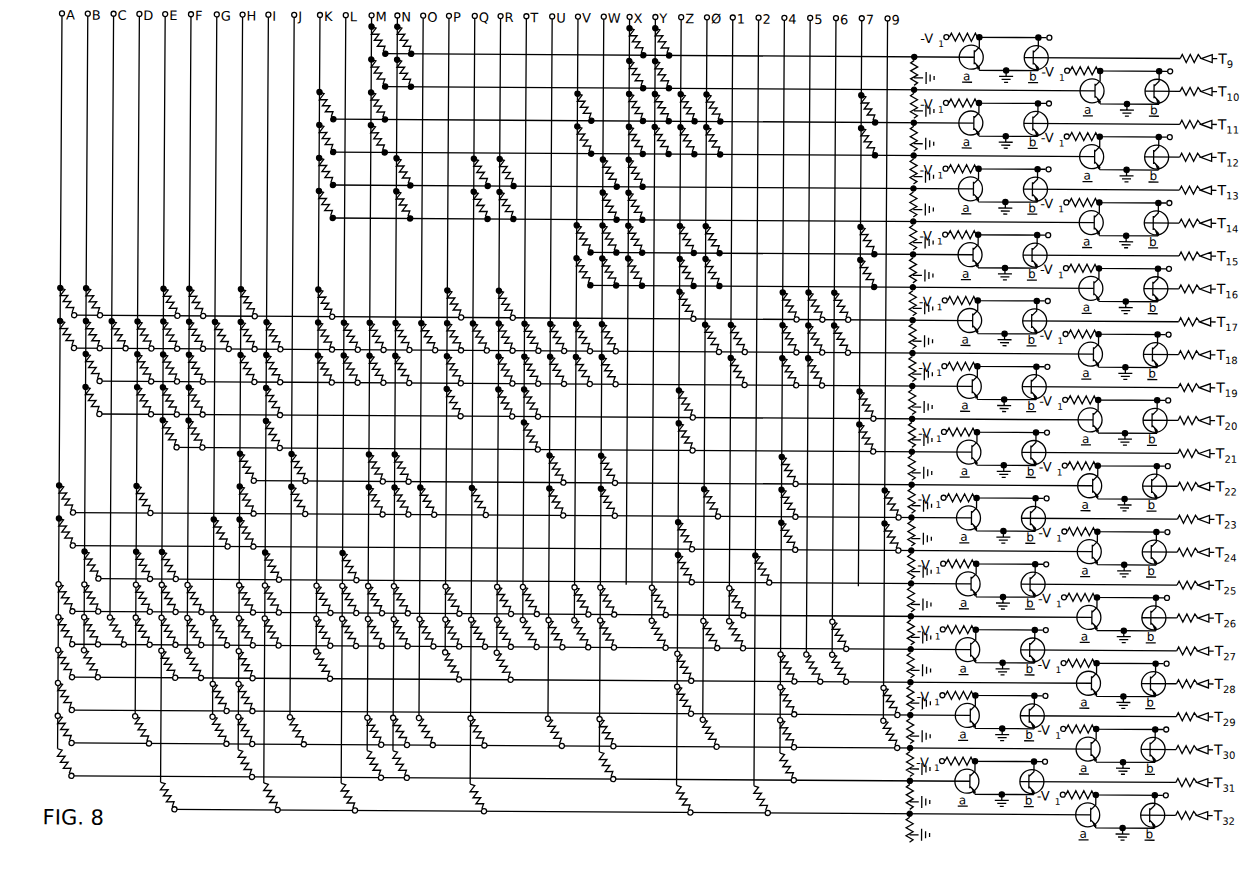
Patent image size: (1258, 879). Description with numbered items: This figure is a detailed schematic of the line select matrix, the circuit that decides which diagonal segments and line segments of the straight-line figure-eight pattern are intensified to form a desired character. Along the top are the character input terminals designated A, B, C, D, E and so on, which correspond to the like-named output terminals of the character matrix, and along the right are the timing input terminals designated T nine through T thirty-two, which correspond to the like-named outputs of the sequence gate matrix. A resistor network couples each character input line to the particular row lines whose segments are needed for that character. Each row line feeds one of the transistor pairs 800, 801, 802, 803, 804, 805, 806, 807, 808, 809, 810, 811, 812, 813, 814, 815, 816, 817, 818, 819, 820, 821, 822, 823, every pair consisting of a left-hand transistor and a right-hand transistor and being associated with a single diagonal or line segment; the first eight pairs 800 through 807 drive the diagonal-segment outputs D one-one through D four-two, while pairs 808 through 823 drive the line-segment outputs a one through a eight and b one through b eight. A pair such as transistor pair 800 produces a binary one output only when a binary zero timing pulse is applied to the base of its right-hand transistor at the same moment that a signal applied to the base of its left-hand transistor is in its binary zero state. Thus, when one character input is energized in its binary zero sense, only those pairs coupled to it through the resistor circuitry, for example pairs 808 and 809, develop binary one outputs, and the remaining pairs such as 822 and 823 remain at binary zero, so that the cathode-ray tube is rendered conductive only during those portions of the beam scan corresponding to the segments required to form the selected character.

The transistor pair 800 is at (999, 57).
The transistor pair 801 is at (1120, 91).
The transistor pair 802 is at (999, 123).
The transistor pair 803 is at (1119, 156).
The transistor pair 804 is at (998, 189).
The transistor pair 805 is at (1119, 222).
The transistor pair 806 is at (998, 254).
The transistor pair 807 is at (1119, 288).
The transistor pair 808 is at (994, 320).
The transistor pair 809 is at (1114, 354).
The transistor pair 810 is at (993, 386).
The transistor pair 811 is at (1114, 420).
The transistor pair 812 is at (993, 452).
The transistor pair 813 is at (1114, 485).
The transistor pair 814 is at (992, 518).
The transistor pair 815 is at (1114, 551).
The transistor pair 816 is at (992, 584).
The transistor pair 817 is at (1113, 617).
The transistor pair 818 is at (992, 649).
The transistor pair 819 is at (1113, 683).
The transistor pair 820 is at (991, 715).
The transistor pair 821 is at (1112, 749).
The transistor pair 822 is at (991, 781).
The transistor pair 823 is at (1113, 815).